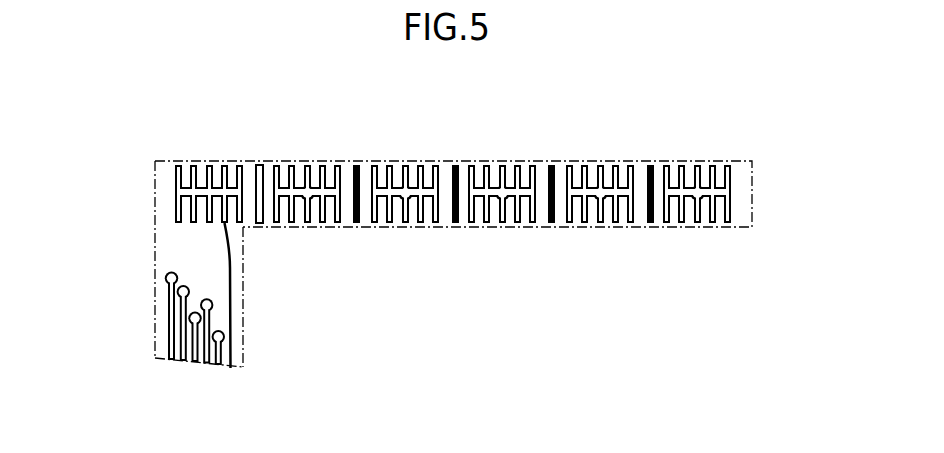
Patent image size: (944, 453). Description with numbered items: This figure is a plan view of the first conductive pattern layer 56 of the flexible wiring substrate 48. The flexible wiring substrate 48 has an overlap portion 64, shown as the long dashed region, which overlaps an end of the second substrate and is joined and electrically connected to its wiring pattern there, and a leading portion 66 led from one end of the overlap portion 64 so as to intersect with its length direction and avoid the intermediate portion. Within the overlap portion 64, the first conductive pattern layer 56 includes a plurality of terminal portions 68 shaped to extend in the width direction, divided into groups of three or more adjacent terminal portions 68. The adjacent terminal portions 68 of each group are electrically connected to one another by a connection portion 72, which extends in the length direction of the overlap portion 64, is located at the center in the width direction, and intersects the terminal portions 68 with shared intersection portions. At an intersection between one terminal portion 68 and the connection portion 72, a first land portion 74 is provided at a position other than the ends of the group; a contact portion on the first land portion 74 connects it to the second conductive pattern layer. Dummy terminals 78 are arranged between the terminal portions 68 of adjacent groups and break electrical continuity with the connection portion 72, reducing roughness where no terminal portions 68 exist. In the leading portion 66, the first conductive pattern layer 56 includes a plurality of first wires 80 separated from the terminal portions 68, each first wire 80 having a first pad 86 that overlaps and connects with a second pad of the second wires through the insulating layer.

The flexible wiring substrate 48 is at (148, 202).
The first conductive pattern layer 56 is at (749, 189).
The overlap portion 64 is at (752, 207).
The leading portion 66 is at (243, 299).
The terminal portions 68 is at (420, 214).
The connection portion 72 is at (382, 187).
The first land portion 74 is at (399, 205).
The dummy terminals 78 is at (356, 163).
The first wires 80 is at (168, 330).
The first pad 86 is at (168, 272).